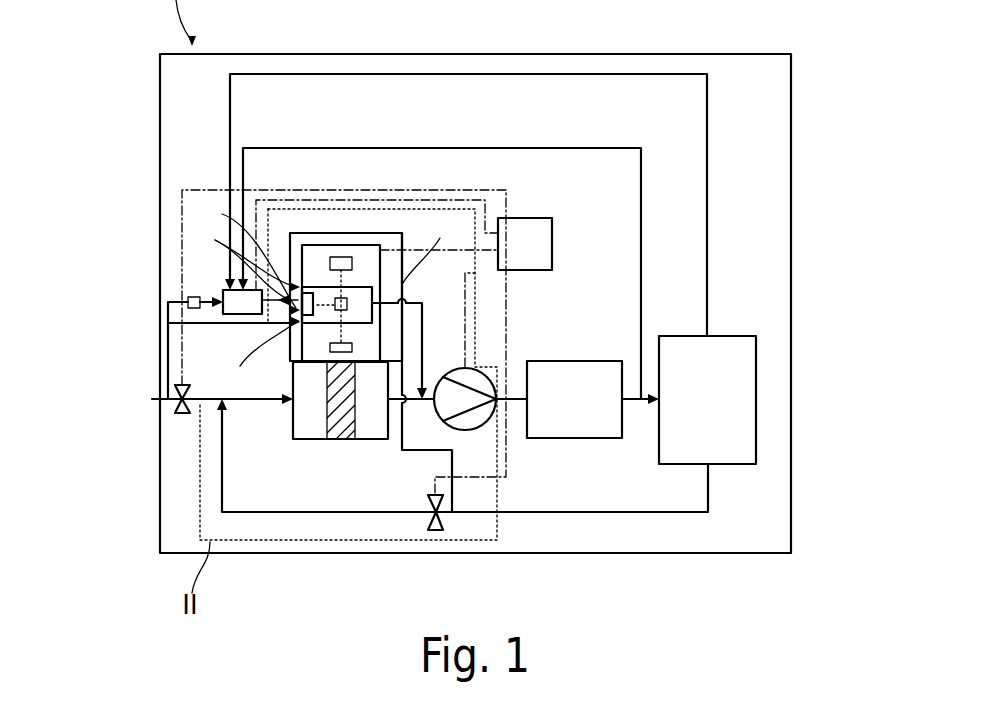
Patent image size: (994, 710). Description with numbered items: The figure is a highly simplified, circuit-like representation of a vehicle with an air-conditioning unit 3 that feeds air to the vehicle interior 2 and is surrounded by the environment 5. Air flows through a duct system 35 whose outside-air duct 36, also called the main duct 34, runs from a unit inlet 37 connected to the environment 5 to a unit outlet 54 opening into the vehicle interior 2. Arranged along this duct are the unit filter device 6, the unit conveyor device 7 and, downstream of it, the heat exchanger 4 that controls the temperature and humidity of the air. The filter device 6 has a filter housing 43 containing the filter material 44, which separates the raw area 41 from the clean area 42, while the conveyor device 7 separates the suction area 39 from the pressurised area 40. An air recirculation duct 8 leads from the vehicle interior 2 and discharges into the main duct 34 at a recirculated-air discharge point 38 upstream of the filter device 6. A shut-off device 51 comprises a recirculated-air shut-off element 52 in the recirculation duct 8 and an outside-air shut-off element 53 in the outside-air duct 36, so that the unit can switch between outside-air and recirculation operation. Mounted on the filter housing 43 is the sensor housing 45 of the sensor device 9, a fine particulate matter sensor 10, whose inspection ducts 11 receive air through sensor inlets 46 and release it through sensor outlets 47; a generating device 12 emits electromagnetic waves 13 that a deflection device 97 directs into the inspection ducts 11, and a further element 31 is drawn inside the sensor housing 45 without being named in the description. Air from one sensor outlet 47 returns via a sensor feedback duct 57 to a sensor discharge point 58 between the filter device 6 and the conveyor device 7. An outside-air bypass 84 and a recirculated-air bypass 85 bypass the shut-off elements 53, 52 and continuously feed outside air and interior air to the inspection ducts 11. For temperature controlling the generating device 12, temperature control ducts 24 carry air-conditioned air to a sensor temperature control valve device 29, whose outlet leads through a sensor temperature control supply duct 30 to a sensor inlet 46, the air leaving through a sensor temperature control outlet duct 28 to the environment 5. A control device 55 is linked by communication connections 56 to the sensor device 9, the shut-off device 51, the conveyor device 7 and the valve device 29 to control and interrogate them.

The vehicle interior 2 is at (701, 413).
The air-conditioning unit 3 is at (722, 90).
The heat exchanger 4 is at (566, 413).
The environment 5 is at (98, 192).
The unit filter device 6 is at (313, 447).
The unit conveyor device 7 is at (466, 437).
The air recirculation duct 8 is at (600, 515).
The sensor device 9 is at (359, 226).
The fine particulate matter sensor 10 is at (354, 228).
The inspection duct 11 is at (360, 286).
The generating device 12 is at (302, 272).
The electromagnetic waves 13 is at (314, 345).
The temperature control duct 24 is at (710, 192).
The sensor temperature control outlet duct 28 is at (258, 290).
The sensor temperature control valve device 29 is at (223, 290).
The sensor temperature control supply duct 30 is at (240, 325).
The heater 31 is at (376, 318).
The main duct 34 is at (405, 450).
The duct system 35 is at (160, 481).
The outside-air duct 36 is at (200, 412).
The unit inlet 37 is at (160, 399).
The recirculated-air discharge point 38 is at (225, 445).
The suction area 39 is at (388, 519).
The pressurised area 40 is at (523, 519).
The raw area 41 is at (262, 503).
The clean area 42 is at (350, 500).
The filter housing 43 is at (293, 418).
The filter material 44 is at (357, 430).
The sensor housing 45 is at (315, 277).
The sensor inlet 46 is at (245, 291).
The sensor outlet 47 is at (322, 255).
The shut-off device 51 is at (508, 497).
The recirculated-air shut-off element 52 is at (434, 530).
The outside-air shut-off element 53 is at (175, 413).
The unit outlet 54 is at (655, 402).
The control device 55 is at (513, 257).
The communication connections 56 is at (472, 199).
The sensor feedback duct 57 is at (403, 305).
The sensor discharge point 58 is at (422, 387).
The outside-air bypass 84 is at (168, 340).
The recirculated-air bypass 85 is at (413, 452).
The deflection device 97 is at (347, 311).